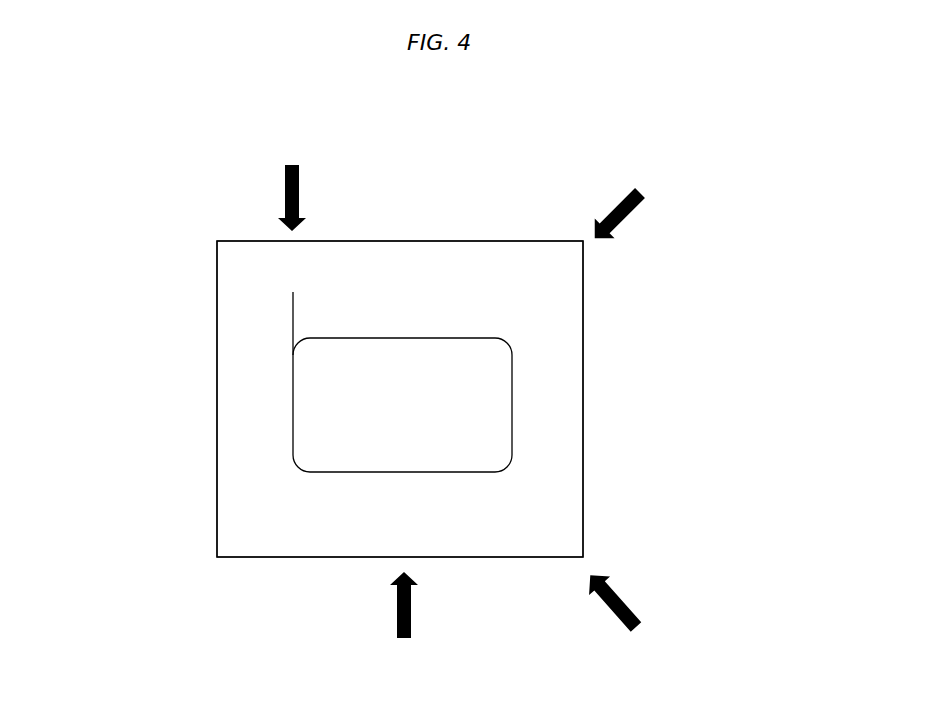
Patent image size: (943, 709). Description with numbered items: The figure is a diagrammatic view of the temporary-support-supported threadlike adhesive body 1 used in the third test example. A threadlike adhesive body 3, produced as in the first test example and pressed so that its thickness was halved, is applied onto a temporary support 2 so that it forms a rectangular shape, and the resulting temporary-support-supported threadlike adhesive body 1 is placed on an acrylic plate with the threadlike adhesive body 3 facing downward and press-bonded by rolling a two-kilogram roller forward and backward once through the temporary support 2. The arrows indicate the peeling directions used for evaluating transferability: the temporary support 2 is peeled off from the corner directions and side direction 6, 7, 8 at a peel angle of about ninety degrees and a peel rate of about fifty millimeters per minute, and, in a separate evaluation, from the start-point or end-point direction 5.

The temporary-support-supported threadlike adhesive body 1 is at (452, 208).
The temporary support 2 is at (253, 292).
The threadlike adhesive body 3 is at (292, 428).
The peeling direction 5 is at (283, 188).
The peeling direction 6 is at (645, 195).
The peeling direction 7 is at (632, 605).
The peeling direction 8 is at (395, 626).